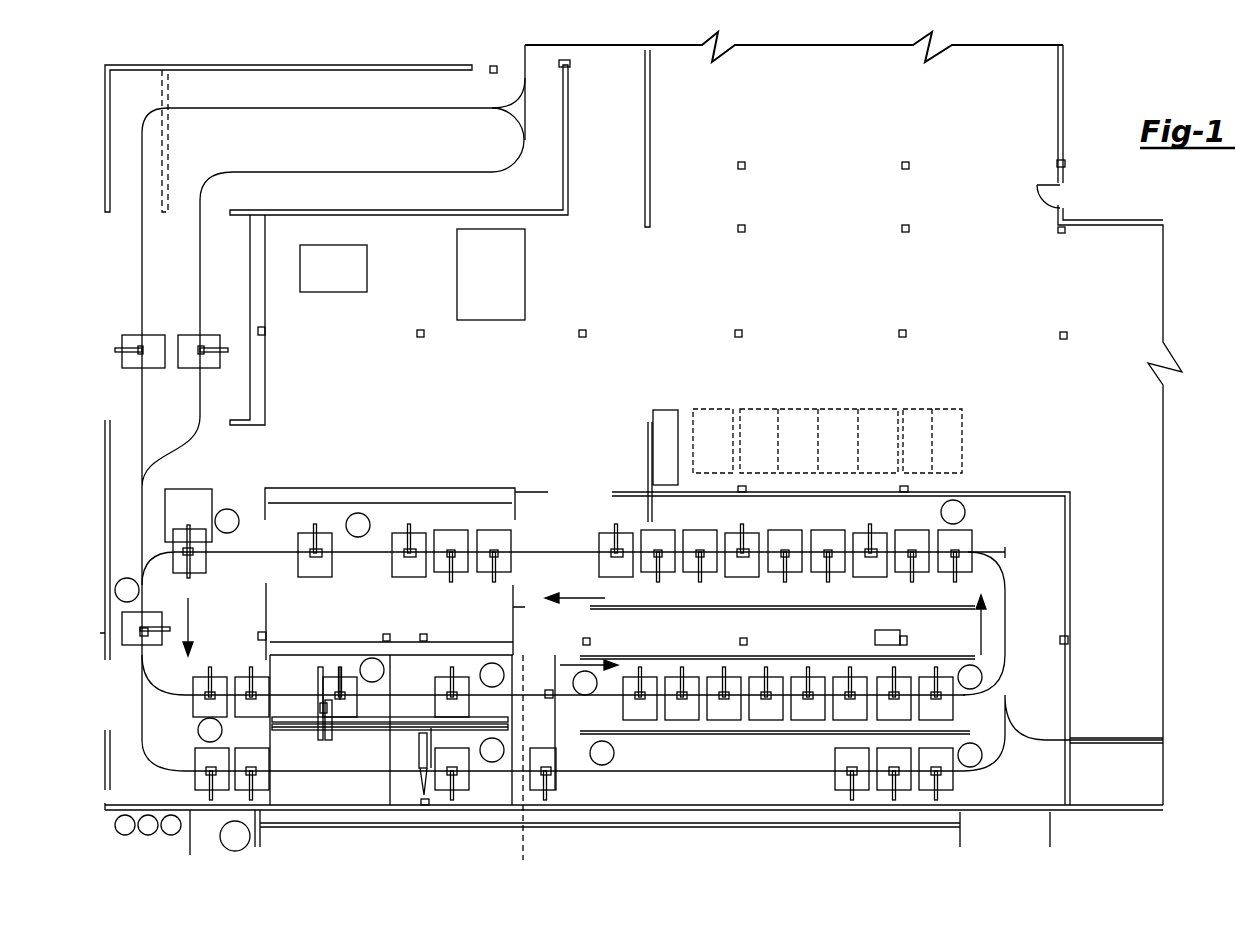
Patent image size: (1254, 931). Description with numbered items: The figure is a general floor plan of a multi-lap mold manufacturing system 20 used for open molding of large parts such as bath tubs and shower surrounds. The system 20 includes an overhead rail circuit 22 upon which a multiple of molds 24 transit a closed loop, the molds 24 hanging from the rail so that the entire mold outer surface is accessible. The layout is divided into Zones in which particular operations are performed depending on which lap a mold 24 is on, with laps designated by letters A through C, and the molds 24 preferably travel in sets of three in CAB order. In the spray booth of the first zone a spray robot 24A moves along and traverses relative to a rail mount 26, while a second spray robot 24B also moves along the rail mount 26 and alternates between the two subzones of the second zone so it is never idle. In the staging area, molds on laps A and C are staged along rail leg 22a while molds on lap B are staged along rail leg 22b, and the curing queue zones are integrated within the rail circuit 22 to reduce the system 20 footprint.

The multi-lap mold manufacturing system 20 is at (536, 437).
The overhead rail circuit 22 is at (521, 550).
The rail leg 22a is at (153, 678).
The rail leg 22b is at (153, 753).
The mold 24 is at (172, 565).
The spray robot 24A is at (313, 712).
The second spray robot 24B is at (420, 752).
The rail mount 26 is at (388, 743).